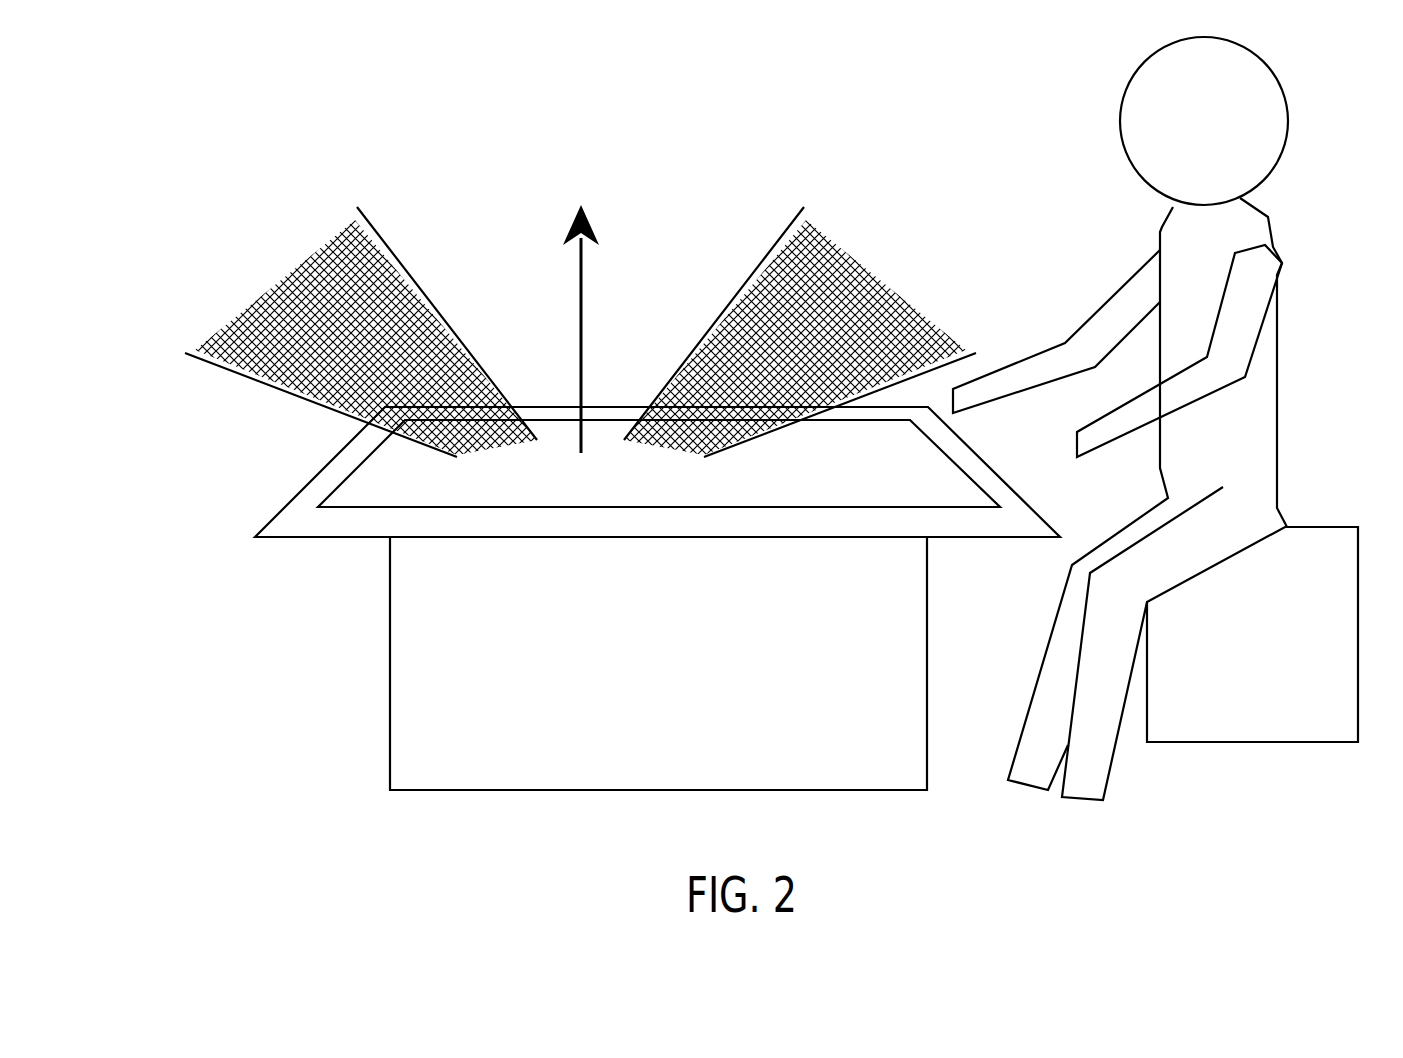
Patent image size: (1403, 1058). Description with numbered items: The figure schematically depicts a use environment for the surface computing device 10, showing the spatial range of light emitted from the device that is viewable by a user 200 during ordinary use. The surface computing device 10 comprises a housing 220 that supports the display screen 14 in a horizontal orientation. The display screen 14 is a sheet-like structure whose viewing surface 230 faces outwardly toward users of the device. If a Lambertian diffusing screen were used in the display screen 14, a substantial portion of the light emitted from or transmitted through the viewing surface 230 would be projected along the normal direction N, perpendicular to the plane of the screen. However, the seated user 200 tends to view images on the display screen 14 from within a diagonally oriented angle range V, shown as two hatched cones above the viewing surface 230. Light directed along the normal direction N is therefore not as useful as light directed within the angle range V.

The surface computing device 10 is at (225, 183).
The display screen 14 is at (310, 512).
The viewing surface 230 is at (560, 433).
The housing 220 is at (389, 687).
The user 200 is at (1280, 382).
The angle range V is at (407, 268).
The normal direction N is at (582, 320).